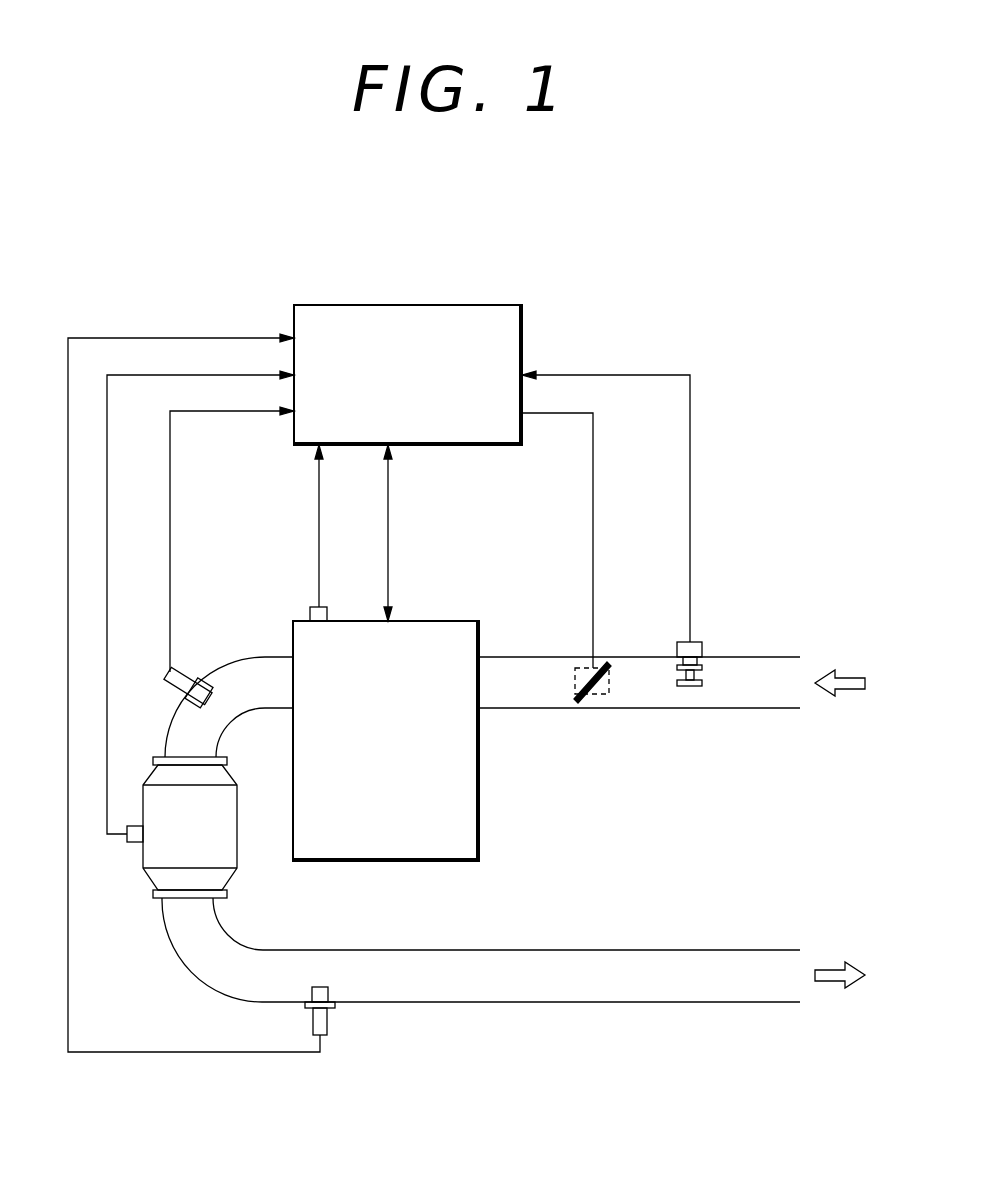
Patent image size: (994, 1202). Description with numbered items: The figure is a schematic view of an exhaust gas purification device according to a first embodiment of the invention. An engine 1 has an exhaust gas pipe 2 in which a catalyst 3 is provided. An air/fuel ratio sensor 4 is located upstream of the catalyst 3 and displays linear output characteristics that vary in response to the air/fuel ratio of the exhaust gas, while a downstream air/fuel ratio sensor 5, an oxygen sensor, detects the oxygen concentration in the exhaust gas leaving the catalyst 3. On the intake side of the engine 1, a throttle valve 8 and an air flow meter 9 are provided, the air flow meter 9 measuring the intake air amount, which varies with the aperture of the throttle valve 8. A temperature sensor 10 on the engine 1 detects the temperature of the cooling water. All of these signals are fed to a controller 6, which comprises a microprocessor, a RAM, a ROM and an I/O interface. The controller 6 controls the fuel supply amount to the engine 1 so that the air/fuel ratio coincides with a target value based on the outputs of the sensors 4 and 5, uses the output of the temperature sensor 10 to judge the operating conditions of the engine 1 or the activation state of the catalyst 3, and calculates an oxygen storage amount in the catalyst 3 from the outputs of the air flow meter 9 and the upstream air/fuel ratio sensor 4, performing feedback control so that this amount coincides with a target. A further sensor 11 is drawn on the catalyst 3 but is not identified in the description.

The engine 1 is at (455, 825).
The exhaust gas pipe 2 is at (643, 1003).
The catalyst 3 is at (220, 847).
The air/fuel ratio sensor 4 is at (187, 671).
The air/fuel ratio sensor (oxygen sensor) 5 is at (323, 1017).
The controller 6 is at (446, 306).
The throttle valve 8 is at (610, 668).
The air flow meter 9 is at (700, 642).
The temperature sensor 10 is at (310, 607).
The catalyst temperature sensor 11 is at (135, 840).